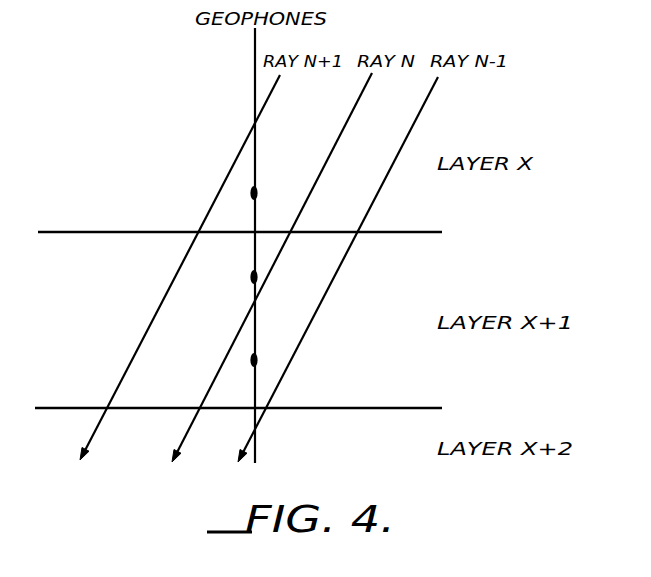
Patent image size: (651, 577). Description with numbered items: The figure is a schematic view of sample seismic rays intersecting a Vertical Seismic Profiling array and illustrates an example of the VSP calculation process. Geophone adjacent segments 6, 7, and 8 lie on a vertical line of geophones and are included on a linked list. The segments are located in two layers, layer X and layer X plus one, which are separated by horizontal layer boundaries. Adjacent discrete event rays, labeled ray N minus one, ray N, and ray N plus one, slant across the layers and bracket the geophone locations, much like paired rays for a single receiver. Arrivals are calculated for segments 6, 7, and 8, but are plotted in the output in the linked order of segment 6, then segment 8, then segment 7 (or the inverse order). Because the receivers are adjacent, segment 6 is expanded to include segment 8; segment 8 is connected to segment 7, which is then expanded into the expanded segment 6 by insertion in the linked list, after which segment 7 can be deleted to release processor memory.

The geophone adjacent segment 6 is at (262, 361).
The geophone adjacent segment 7 is at (263, 193).
The geophone adjacent segment 8 is at (241, 280).